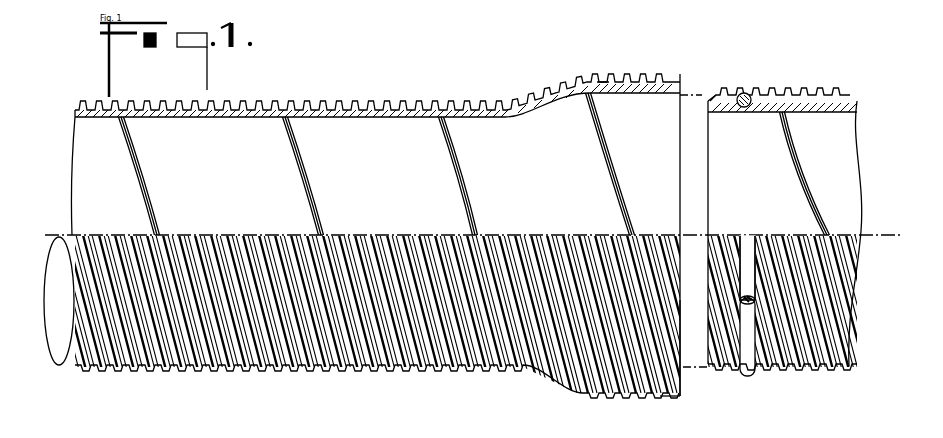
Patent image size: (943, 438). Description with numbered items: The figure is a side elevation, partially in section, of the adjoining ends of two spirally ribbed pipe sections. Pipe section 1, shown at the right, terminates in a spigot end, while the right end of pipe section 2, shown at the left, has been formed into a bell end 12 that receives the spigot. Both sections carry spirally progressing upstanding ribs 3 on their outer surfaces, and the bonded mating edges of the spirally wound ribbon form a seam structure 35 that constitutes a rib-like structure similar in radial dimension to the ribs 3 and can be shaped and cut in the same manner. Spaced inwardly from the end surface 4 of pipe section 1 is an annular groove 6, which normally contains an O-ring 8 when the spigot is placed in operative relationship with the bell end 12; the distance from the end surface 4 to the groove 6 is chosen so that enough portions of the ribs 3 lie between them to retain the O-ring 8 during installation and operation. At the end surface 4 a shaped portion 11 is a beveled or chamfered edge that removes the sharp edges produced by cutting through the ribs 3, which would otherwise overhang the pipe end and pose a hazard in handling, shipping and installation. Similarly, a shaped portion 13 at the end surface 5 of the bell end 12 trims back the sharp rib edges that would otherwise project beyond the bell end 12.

The pipe section 1 is at (826, 88).
The pipe section 2 is at (336, 90).
The upstanding ribs 3 is at (508, 104).
The seam structure 35 is at (432, 104).
The end surface 4 is at (707, 366).
The end surface 5 is at (680, 330).
The annular groove 6 is at (759, 238).
The O-ring 8 is at (746, 93).
The shaped portion 11 is at (710, 92).
The bell end 12 is at (652, 70).
The shaped portion 13 is at (669, 391).